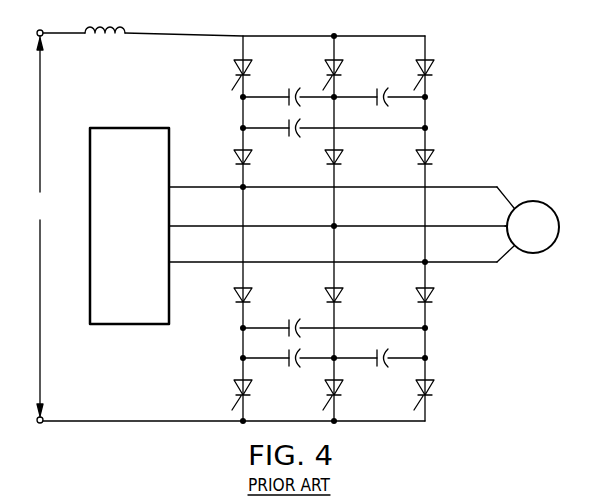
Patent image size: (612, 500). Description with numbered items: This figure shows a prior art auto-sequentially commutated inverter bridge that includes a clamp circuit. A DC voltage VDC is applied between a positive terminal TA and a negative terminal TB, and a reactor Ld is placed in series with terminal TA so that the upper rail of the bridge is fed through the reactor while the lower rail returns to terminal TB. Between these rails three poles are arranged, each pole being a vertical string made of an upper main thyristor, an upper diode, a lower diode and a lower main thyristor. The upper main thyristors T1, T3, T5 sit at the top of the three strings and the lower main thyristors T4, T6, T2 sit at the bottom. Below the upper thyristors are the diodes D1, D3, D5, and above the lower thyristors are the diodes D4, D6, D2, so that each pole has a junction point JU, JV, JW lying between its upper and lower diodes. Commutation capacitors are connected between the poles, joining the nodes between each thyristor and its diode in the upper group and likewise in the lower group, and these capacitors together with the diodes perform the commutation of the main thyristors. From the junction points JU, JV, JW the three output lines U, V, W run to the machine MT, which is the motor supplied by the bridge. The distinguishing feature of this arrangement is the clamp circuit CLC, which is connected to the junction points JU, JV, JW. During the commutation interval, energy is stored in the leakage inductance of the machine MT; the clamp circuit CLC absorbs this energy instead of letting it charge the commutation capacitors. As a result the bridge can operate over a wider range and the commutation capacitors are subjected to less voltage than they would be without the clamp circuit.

The element TA is at (76, 30).
The element Ld is at (101, 38).
The element VDC is at (41, 226).
The element TB is at (119, 415).
The clamp circuit CLC is at (115, 330).
The main thyristor T1 is at (234, 68).
The main thyristor T3 is at (326, 66).
The main thyristor T5 is at (436, 69).
The main thyristor T4 is at (236, 388).
The main thyristor T6 is at (327, 388).
The main thyristor T2 is at (436, 388).
The diode D1 is at (251, 159).
The diode D3 is at (342, 159).
The diode D5 is at (434, 159).
The diode D4 is at (234, 296).
The diode D6 is at (342, 296).
The diode D2 is at (434, 296).
The junction point JU is at (240, 185).
The junction point JV is at (331, 224).
The junction point JW is at (422, 260).
The U phase output line U is at (473, 186).
The V phase output line V is at (475, 224).
The W phase output line W is at (472, 261).
The machine MT is at (533, 227).